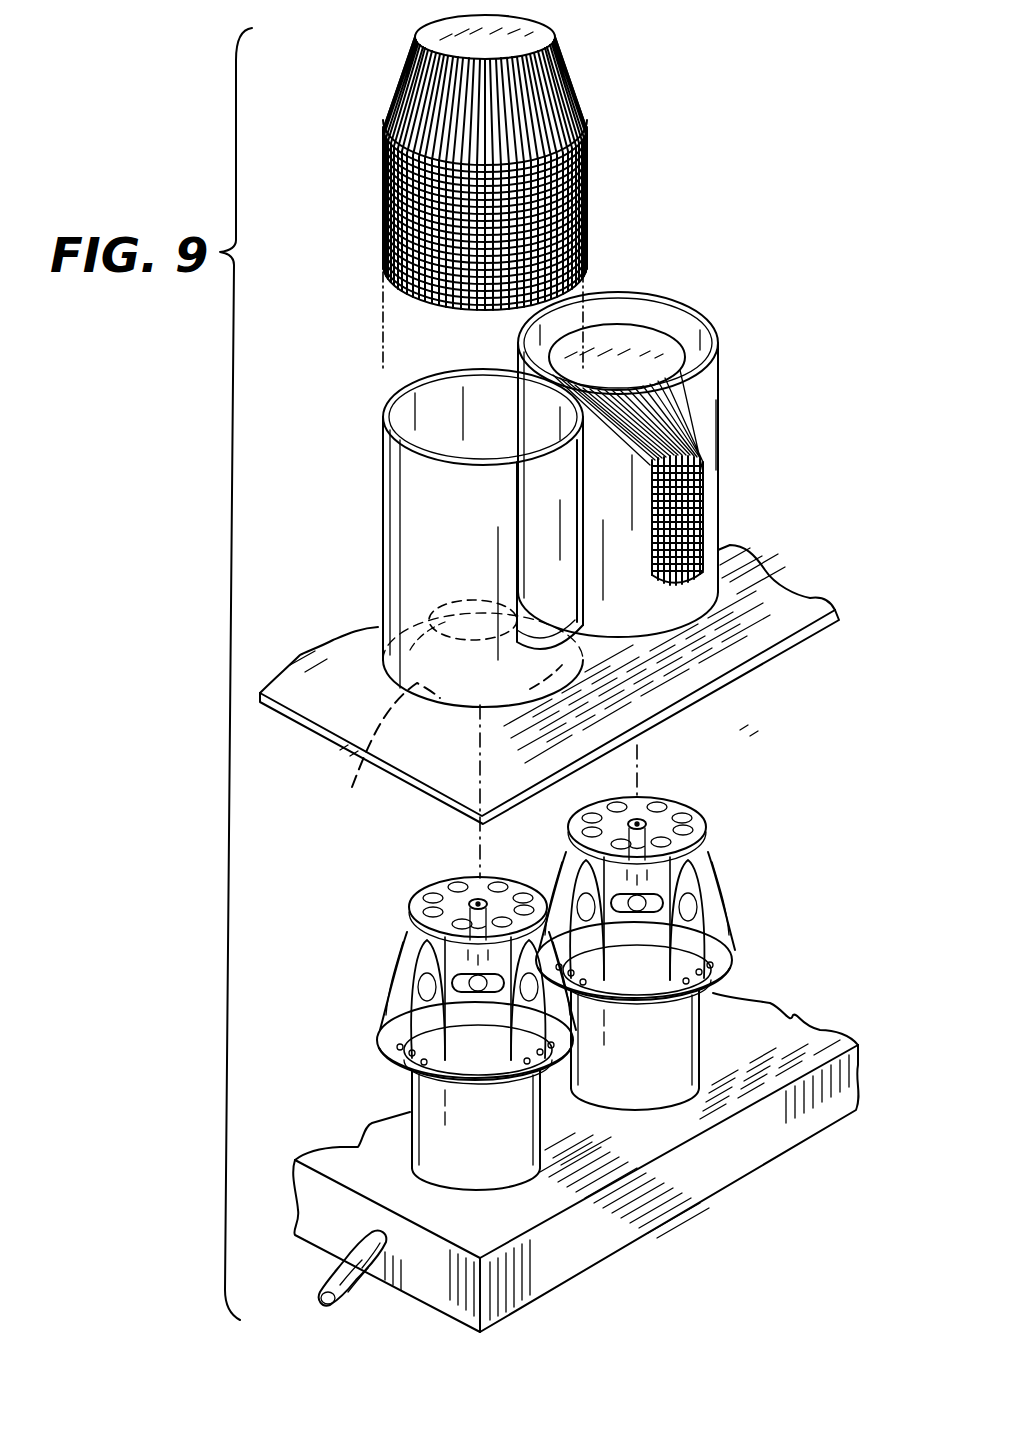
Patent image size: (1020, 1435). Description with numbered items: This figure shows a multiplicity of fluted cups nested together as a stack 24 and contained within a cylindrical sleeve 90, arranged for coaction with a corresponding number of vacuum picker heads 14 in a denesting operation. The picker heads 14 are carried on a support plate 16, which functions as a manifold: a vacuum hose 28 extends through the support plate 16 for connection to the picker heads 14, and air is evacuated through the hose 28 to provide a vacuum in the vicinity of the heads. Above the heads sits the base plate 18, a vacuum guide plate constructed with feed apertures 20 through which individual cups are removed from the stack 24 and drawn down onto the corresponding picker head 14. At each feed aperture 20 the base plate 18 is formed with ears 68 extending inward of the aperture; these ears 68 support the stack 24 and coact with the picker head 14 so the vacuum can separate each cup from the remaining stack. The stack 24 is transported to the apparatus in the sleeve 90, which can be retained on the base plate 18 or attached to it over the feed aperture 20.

The vacuum picker head 14 is at (742, 912).
The support plate 16 is at (790, 1025).
The base plate 18 is at (803, 606).
The feed aperture 20 is at (463, 650).
The stack of nested fluted cups 24 is at (598, 150).
The vacuum hose 28 is at (337, 1273).
The ear 68 is at (356, 780).
The cylindrical sleeve 90 is at (400, 525).